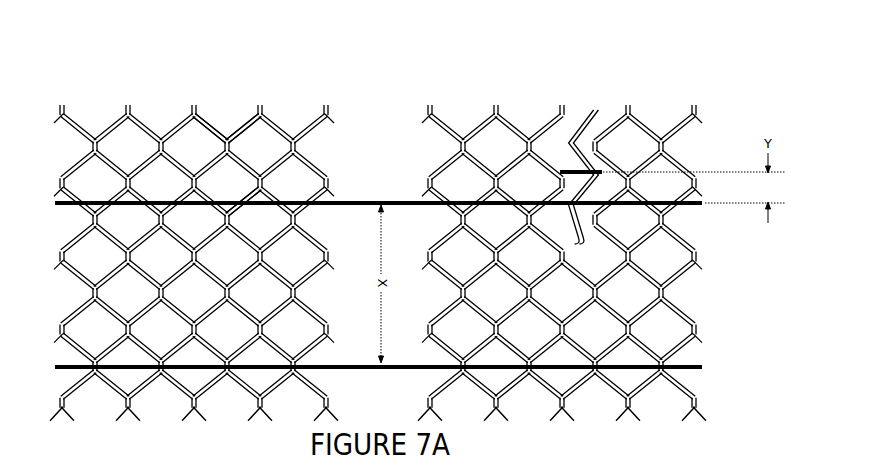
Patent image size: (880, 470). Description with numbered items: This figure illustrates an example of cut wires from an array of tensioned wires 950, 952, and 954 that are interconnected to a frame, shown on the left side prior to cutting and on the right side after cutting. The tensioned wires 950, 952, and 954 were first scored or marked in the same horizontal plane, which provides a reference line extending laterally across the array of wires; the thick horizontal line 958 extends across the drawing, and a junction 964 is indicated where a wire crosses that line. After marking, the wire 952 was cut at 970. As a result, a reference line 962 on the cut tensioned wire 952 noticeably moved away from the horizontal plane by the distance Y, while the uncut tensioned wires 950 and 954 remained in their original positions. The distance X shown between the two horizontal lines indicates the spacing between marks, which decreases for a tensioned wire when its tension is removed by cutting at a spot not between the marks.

The tensioned wire 950 is at (180, 124).
The tensioned wire 952 is at (213, 132).
The tensioned wire 954 is at (250, 125).
The cut line 958 is at (413, 203).
The reference line 962 is at (590, 172).
The strand crossing 964 is at (253, 202).
The cut location 970 is at (578, 246).